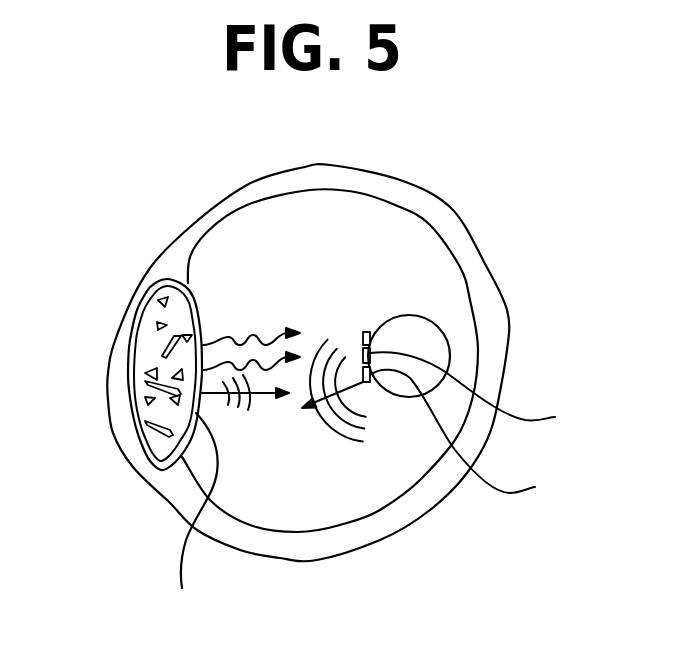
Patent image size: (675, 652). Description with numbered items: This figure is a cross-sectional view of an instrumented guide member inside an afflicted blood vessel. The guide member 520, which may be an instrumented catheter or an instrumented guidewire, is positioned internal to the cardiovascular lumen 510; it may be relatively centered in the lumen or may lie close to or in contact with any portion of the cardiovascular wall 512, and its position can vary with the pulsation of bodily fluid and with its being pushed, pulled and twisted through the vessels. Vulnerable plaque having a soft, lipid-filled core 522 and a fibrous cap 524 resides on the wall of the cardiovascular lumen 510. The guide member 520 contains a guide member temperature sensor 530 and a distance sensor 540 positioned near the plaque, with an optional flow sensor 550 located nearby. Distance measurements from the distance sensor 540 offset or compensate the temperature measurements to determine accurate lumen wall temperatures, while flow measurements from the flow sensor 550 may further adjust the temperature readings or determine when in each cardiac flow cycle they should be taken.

The cardiovascular lumen 510 is at (450, 207).
The cardiovascular wall 512 is at (186, 275).
The guide member 520 is at (447, 347).
The soft, lipid-filled core 522 is at (160, 325).
The fibrous cap 524 is at (191, 517).
The guide member temperature sensor 530 is at (487, 393).
The distance sensor 540 is at (476, 439).
The flow sensor 550 is at (370, 333).